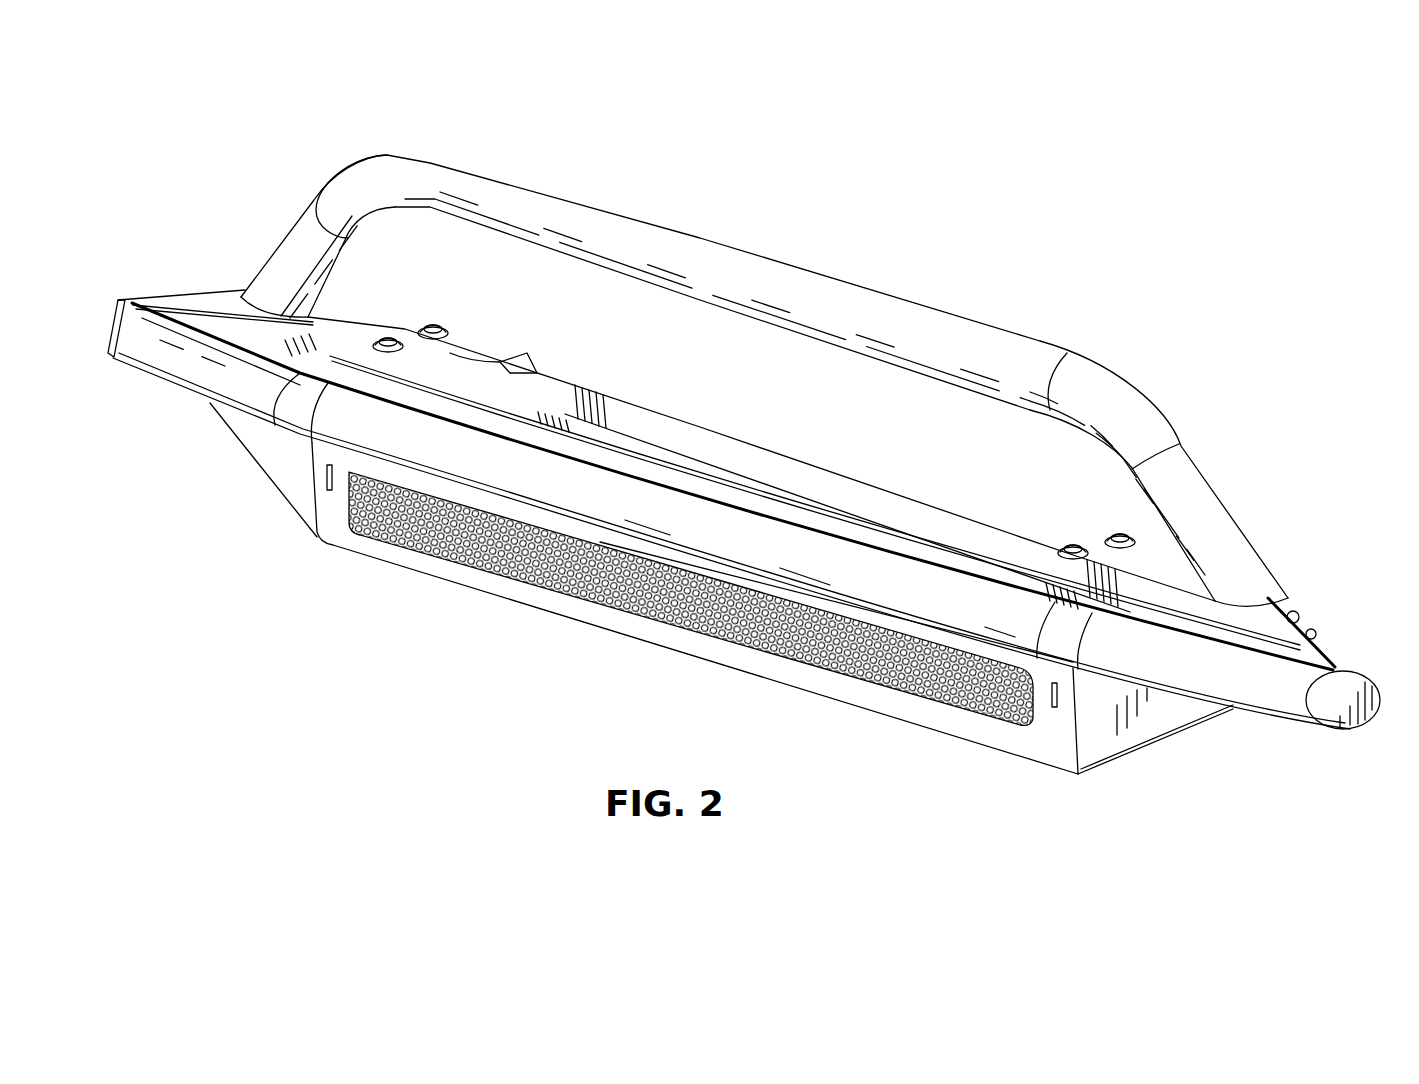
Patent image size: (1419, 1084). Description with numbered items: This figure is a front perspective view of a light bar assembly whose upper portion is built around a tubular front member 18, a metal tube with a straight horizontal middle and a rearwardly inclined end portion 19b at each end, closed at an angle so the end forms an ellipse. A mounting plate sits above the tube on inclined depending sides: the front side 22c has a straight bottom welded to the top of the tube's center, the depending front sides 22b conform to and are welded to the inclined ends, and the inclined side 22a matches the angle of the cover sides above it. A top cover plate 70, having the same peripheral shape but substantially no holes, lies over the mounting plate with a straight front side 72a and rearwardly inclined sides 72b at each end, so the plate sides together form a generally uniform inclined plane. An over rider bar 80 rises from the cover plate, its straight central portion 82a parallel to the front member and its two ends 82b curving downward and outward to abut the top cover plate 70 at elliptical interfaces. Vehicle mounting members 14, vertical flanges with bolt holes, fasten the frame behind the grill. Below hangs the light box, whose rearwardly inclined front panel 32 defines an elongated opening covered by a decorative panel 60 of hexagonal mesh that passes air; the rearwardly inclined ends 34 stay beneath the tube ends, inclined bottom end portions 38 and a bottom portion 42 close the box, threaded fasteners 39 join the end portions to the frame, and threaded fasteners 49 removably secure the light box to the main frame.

The vehicle mounting members 14 is at (530, 358).
The tubular front member 18 is at (747, 550).
The rearwardly inclined end portion 19b is at (143, 362).
The inclined side 22a is at (490, 425).
The depending front side 22b is at (240, 337).
The front side 22c is at (1330, 653).
The front panel 32 is at (337, 528).
The rearwardly inclined end 34 is at (273, 447).
The inclined bottom end portion 38 is at (1113, 755).
The threaded fasteners 39 is at (1292, 612).
The bottom portion 42 is at (721, 630).
The threaded fasteners 49 is at (447, 330).
The decorative panel 60 is at (570, 600).
The top cover plate 70 is at (725, 512).
The straight front side 72a is at (733, 470).
The rearwardly inclined side 72b is at (222, 303).
The over rider bar 80 is at (760, 380).
The central portion 82a is at (672, 238).
The ends 82b is at (305, 220).